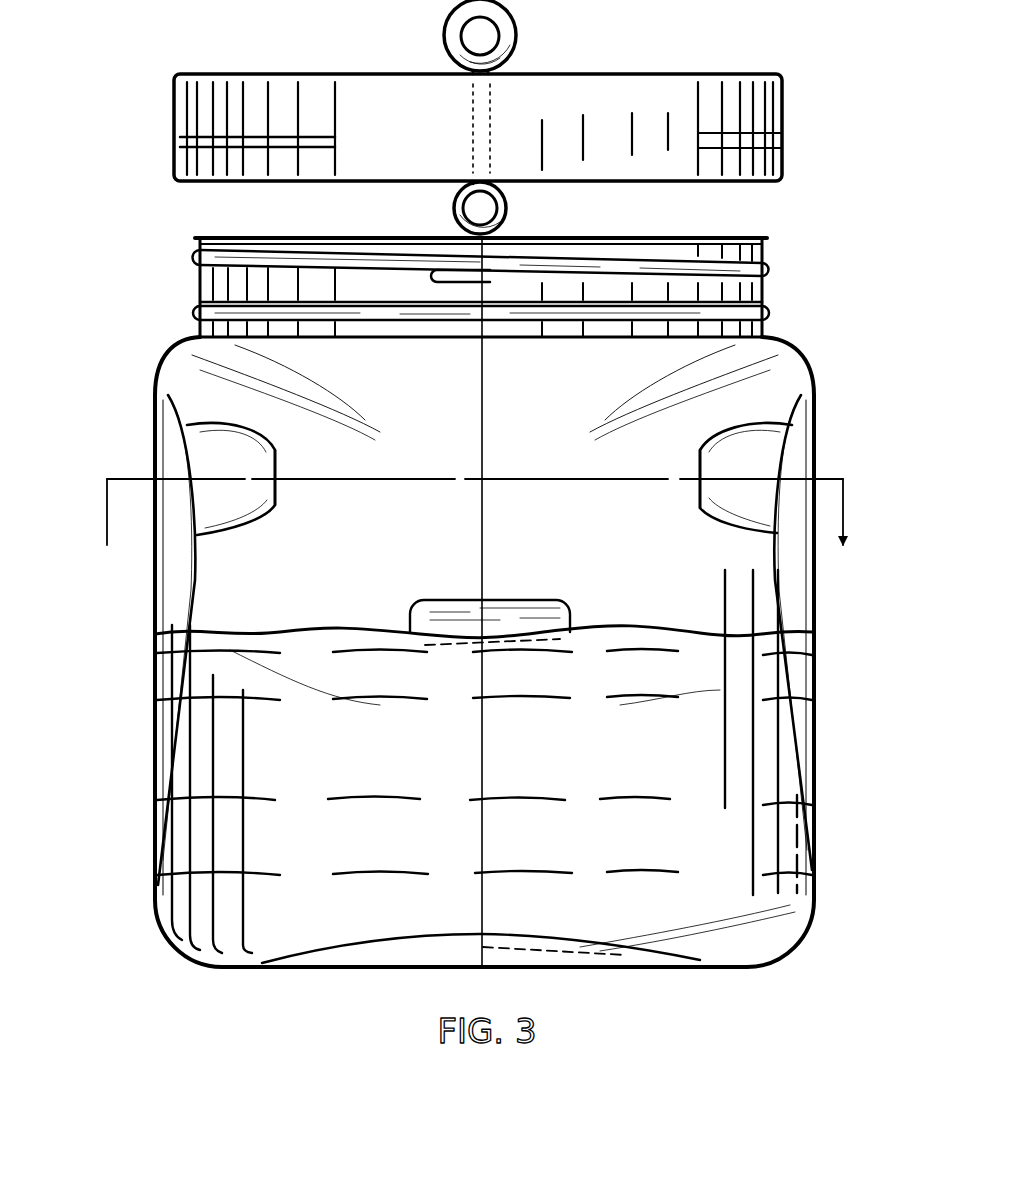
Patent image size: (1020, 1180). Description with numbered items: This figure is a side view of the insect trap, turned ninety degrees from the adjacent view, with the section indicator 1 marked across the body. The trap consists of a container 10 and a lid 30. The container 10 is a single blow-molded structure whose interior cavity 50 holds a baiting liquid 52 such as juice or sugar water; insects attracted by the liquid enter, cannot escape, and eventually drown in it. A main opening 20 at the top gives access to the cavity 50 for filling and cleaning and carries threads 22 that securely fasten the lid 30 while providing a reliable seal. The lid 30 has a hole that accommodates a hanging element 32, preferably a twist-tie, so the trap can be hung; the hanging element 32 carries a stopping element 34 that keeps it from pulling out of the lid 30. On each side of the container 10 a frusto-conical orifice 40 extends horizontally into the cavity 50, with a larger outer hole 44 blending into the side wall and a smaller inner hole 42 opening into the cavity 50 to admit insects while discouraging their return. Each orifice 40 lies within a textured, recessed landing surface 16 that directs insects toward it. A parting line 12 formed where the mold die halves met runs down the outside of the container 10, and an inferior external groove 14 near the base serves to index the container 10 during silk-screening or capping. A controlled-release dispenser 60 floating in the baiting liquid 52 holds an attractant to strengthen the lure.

The section line 1 is at (476, 512).
The container 10 is at (810, 368).
The parting line 12 is at (480, 440).
The external groove 14 is at (530, 942).
The landing surface 16 is at (190, 575).
The main opening 20 is at (757, 236).
The threads 22 is at (193, 256).
The lid 30 is at (174, 108).
The hanging element 32 is at (448, 62).
The stopping element 34 is at (456, 232).
The frusto-conical orifice 40 is at (256, 532).
The inner hole 42 is at (279, 480).
The outer hole 44 is at (185, 449).
The cavity 50 is at (188, 356).
The baiting liquid 52 is at (363, 630).
The controlled-release dispenser 60 is at (505, 598).